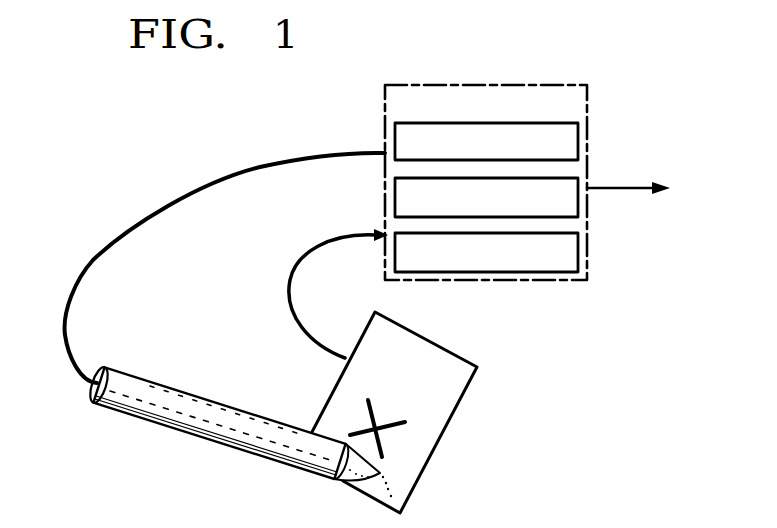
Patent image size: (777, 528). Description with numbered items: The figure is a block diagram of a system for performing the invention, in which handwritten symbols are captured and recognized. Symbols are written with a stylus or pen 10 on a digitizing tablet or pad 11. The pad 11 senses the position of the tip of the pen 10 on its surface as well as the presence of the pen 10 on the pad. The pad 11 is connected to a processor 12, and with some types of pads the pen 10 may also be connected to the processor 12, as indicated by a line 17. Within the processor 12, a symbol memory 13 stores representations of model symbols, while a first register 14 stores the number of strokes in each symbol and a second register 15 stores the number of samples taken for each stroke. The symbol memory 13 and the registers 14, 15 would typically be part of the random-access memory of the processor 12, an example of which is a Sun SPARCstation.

The stylus or pen 10 is at (224, 420).
The digitizing tablet or pad 11 is at (452, 395).
The processor 12 is at (583, 93).
The symbol memory 13 is at (576, 140).
The register 14 is at (396, 190).
The register 15 is at (576, 250).
The line 17 is at (187, 190).